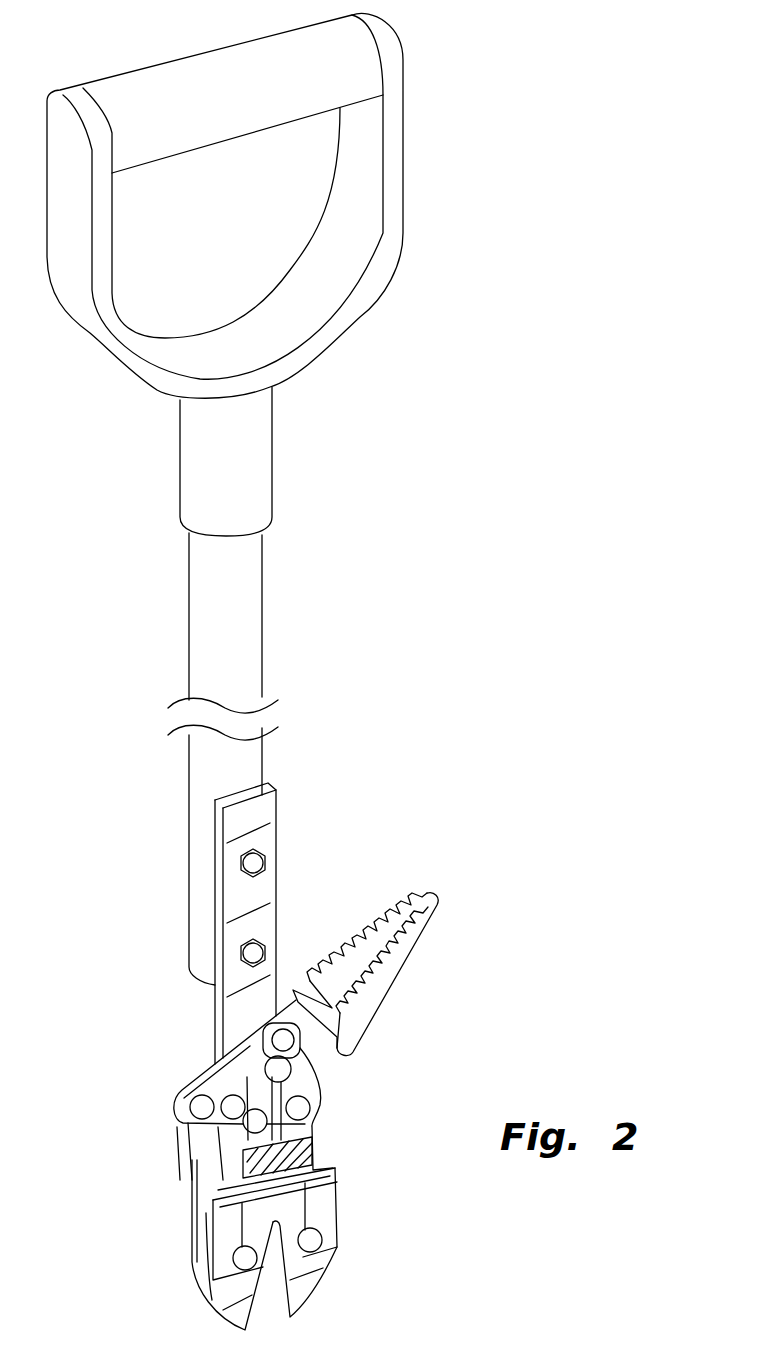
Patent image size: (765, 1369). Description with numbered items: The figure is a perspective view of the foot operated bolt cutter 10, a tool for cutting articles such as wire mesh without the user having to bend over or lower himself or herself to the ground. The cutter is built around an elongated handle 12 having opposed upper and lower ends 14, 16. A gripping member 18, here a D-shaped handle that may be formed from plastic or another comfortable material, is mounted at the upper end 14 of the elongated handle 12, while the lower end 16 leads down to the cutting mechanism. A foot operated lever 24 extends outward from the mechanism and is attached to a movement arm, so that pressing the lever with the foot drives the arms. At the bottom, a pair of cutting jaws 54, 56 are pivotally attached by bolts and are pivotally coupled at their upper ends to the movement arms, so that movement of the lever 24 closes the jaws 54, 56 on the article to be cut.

The foot operated bolt cutter 10 is at (583, 322).
The elongated handle 12 is at (254, 688).
The upper end 14 is at (254, 551).
The lower end 16 is at (217, 983).
The gripping member 18 is at (400, 77).
The foot operated lever 24 is at (425, 938).
The cutting jaw 54 is at (228, 1315).
The cutting jaw 56 is at (303, 1290).